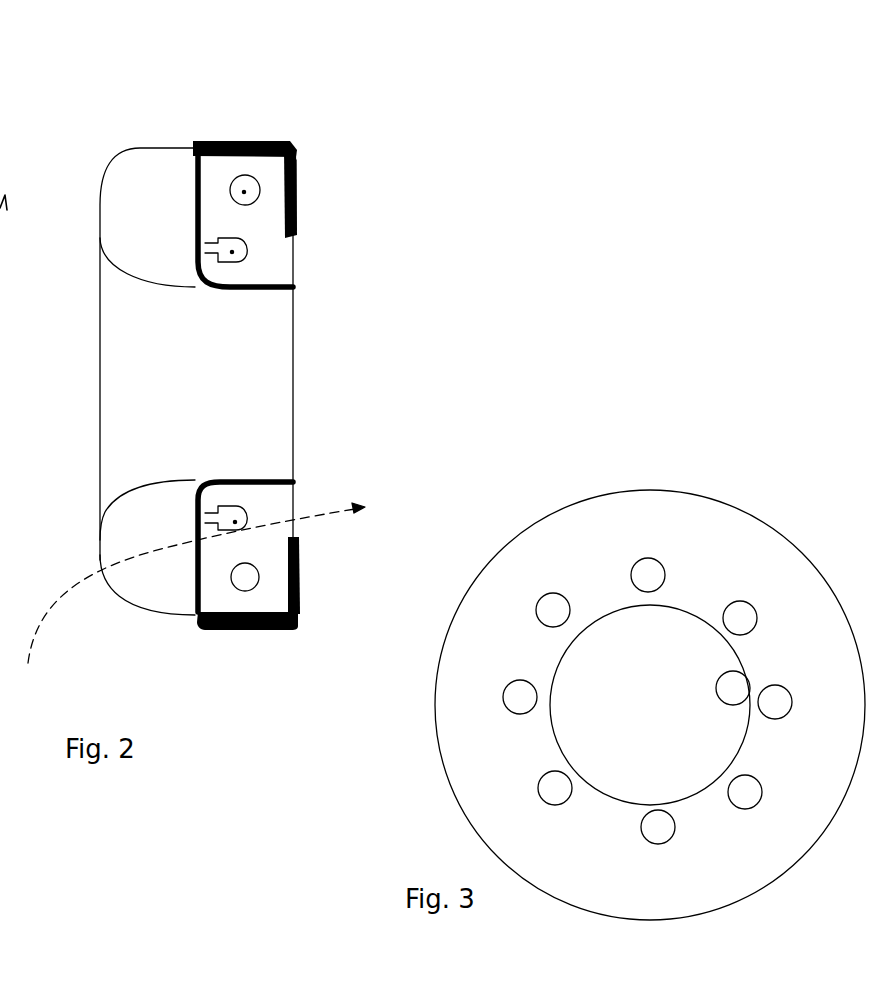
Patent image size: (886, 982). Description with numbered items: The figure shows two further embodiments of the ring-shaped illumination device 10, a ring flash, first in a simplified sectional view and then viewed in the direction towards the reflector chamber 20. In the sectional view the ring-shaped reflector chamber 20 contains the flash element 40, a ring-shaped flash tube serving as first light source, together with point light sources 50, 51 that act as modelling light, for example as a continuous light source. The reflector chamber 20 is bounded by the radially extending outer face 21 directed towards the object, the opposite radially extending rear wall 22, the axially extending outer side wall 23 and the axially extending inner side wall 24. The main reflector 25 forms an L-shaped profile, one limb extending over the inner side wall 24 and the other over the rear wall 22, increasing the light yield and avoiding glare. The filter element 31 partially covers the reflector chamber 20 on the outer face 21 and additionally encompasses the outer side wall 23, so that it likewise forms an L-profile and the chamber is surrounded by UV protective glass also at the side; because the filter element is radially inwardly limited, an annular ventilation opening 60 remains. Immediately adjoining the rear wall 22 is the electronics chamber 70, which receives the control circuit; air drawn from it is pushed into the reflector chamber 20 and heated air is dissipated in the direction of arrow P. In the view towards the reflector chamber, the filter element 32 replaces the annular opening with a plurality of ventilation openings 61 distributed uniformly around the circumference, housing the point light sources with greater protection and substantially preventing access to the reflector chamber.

In FIG. 2, the illumination device 10 is at (321, 126).
In FIG. 3, the illumination device 10 is at (684, 470).
In FIG. 2, the reflector chamber 20 is at (272, 270).
In FIG. 2, the radially extending outer face 21 is at (300, 255).
In FIG. 2, the radially extending rear wall 22 is at (196, 254).
In FIG. 2, the axially extending outer side wall 23 is at (258, 137).
In FIG. 2, the axially extending inner side wall 24 is at (210, 294).
In FIG. 2, the main reflector 25 is at (253, 297).
In FIG. 2, the filter element 31 is at (299, 209).
In FIG. 3, the filter element 32 is at (487, 755).
In FIG. 2, the flash element 40 is at (246, 191).
In FIG. 2, the point light source 50 is at (232, 252).
In FIG. 2, the point light source 51 is at (235, 522).
In FIG. 2, the ventilation opening 60 is at (300, 283).
In FIG. 3, the ventilation openings 61 is at (553, 605).
In FIG. 2, the electronics chamber 70 is at (148, 177).
In FIG. 2, the arrow P is at (333, 527).